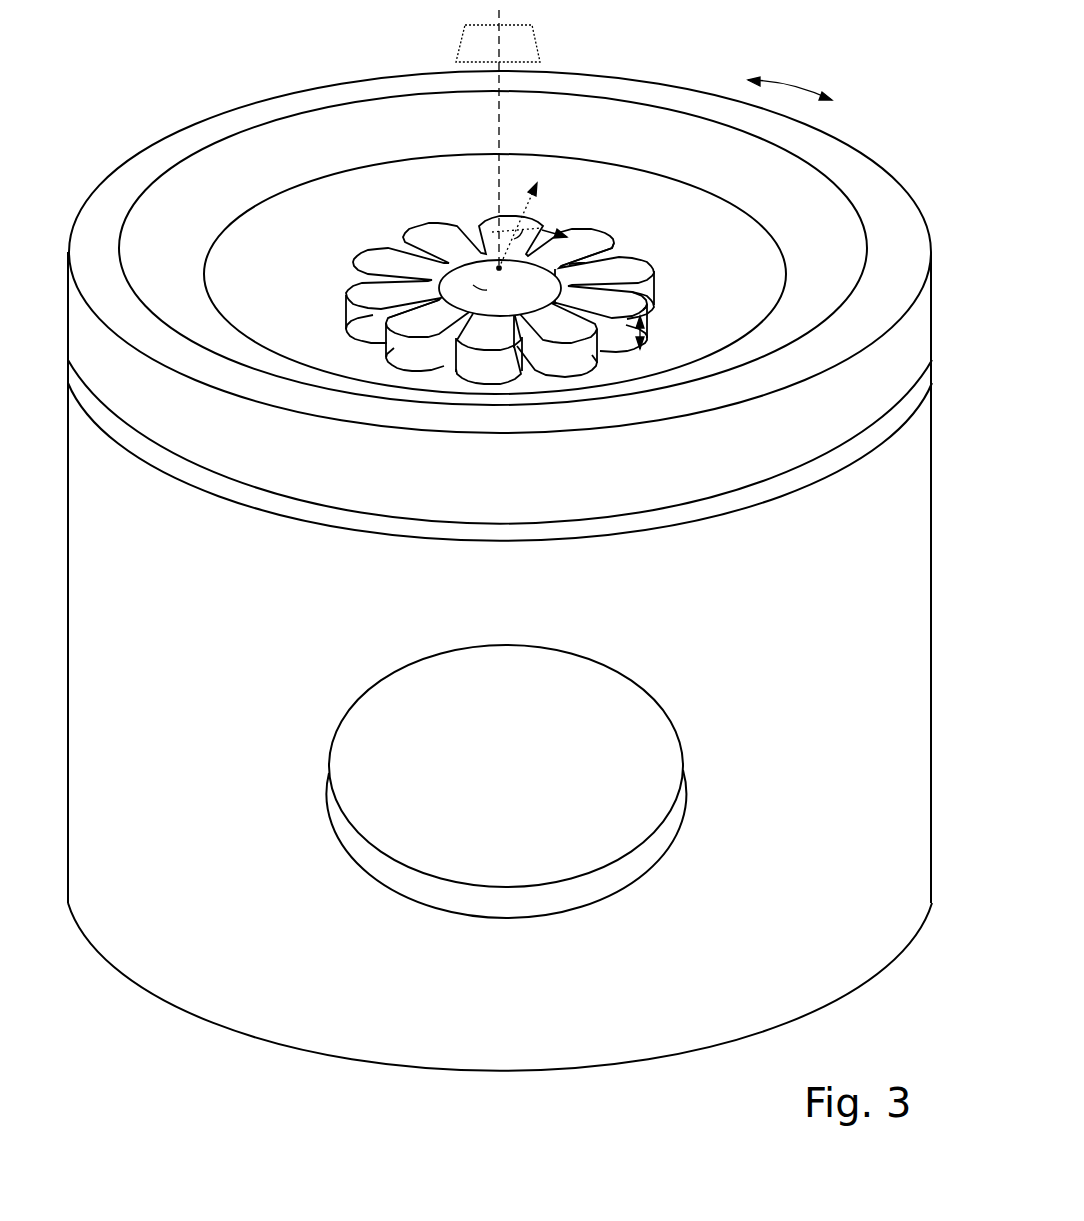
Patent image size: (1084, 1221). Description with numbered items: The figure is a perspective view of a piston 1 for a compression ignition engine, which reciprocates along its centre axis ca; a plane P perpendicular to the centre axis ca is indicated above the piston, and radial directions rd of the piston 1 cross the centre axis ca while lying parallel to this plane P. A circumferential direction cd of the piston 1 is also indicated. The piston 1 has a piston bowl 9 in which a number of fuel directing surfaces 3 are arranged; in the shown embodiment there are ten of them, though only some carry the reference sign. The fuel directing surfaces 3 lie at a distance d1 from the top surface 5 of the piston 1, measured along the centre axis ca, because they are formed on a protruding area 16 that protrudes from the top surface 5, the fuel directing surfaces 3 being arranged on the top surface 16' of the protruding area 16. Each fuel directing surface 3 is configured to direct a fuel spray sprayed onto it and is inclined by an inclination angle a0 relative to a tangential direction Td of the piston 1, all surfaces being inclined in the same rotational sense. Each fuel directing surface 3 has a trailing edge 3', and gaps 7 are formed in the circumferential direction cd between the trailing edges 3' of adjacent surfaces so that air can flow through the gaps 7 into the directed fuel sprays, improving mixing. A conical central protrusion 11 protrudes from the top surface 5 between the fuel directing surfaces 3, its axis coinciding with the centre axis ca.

The piston 1 is at (258, 60).
The piston bowl 9 is at (324, 229).
The top surface 5 is at (729, 310).
The plane P is at (528, 52).
The circumferential direction cd is at (790, 69).
The centre axis ca is at (498, 131).
The radial direction rd is at (528, 203).
The tangential direction Td is at (553, 235).
The inclination angle a0 is at (545, 230).
The central protrusion 11 is at (486, 288).
The fuel directing surface 3 is at (502, 263).
The protruding area 16 is at (500, 330).
The top surface of the protruding area 16' is at (380, 337).
The trailing edge 3' is at (534, 315).
The gap 7 is at (637, 253).
The distance d1 is at (640, 333).